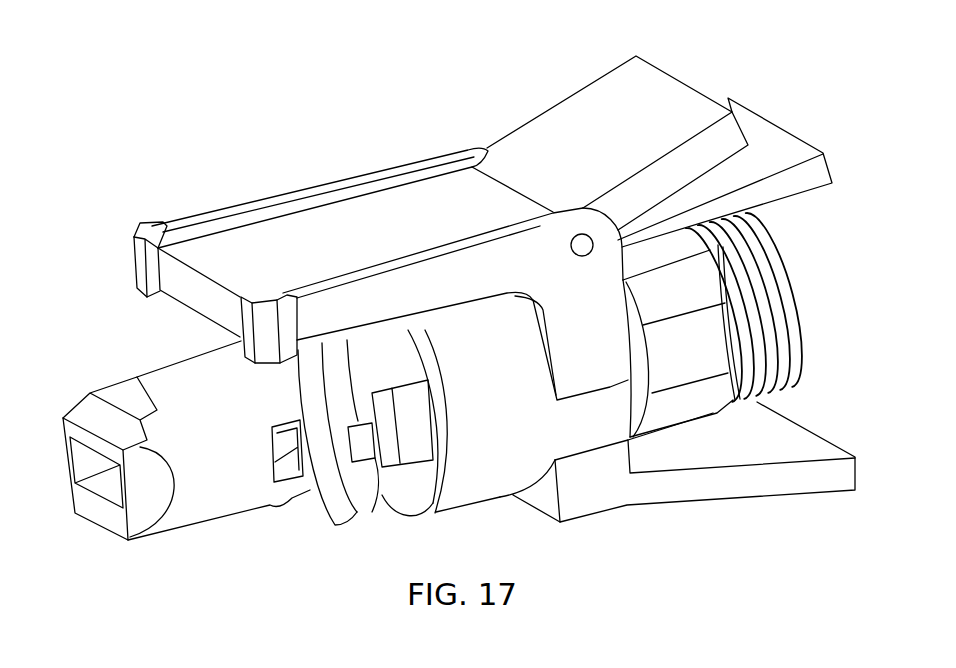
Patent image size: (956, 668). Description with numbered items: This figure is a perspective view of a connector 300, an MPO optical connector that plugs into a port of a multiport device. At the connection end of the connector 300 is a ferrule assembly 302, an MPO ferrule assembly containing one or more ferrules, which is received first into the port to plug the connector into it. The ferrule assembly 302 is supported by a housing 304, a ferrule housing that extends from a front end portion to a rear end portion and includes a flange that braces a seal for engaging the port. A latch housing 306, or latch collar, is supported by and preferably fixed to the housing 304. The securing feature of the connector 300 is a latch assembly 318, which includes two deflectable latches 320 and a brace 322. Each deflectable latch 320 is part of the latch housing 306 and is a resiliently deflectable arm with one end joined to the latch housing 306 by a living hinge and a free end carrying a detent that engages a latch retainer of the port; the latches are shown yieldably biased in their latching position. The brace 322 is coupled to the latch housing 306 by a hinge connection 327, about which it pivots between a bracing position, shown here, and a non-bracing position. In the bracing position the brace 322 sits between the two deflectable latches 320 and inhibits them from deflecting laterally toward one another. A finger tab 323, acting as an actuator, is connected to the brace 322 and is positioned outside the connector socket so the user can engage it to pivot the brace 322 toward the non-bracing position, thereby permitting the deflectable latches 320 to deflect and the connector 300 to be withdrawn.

The connector 300 is at (302, 92).
The ferrule assembly 302 is at (80, 534).
The housing 304 is at (323, 549).
The latch housing 306 is at (445, 136).
The latch assembly 318 is at (225, 176).
The deflectable latch 320 is at (305, 193).
The brace 322 is at (400, 203).
The finger tab 323 is at (601, 107).
The hinge connection 327 is at (584, 259).